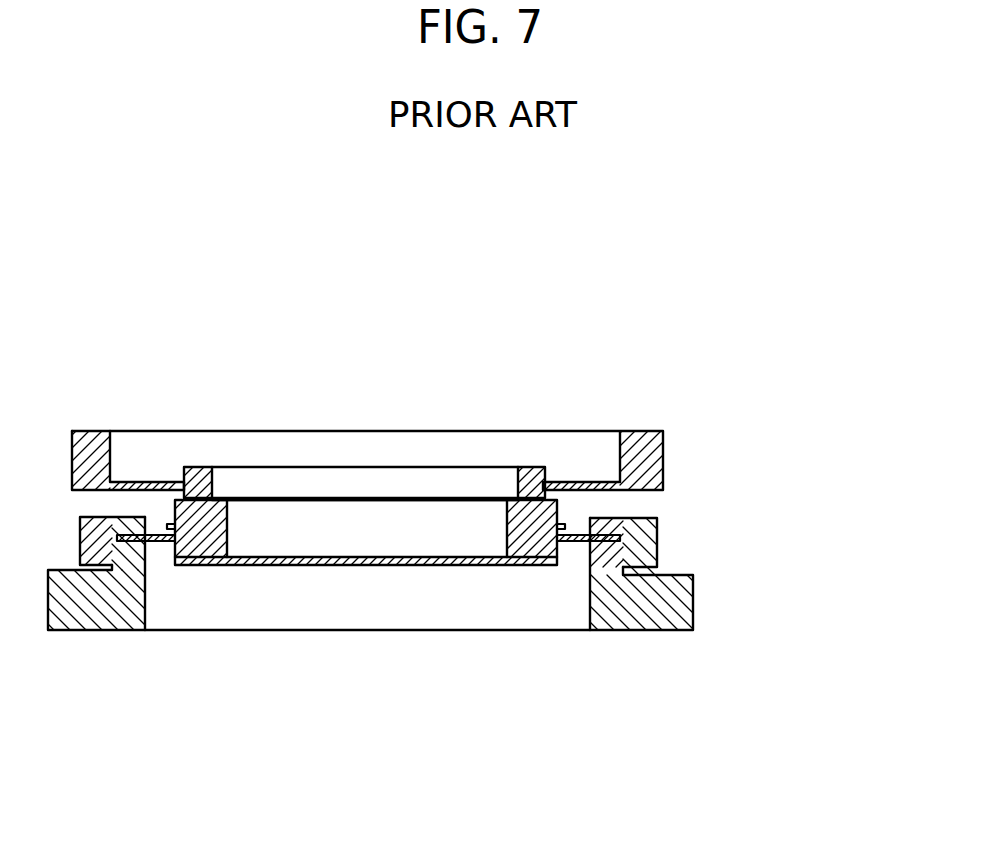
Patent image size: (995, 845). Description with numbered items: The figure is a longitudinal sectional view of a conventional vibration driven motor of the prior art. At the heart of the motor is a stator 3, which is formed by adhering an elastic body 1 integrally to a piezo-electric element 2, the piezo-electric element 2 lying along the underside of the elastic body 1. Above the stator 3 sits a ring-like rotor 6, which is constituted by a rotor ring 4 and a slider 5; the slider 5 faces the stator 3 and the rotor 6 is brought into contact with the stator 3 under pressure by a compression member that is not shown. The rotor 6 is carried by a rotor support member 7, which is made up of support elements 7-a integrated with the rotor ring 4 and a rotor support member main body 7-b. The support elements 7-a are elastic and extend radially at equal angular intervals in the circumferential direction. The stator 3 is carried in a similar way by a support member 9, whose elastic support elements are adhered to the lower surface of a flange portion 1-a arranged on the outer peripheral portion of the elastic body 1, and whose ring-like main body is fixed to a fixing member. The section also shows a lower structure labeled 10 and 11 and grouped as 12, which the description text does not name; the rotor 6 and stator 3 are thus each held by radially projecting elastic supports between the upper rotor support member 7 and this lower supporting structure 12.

The elastic body 1 is at (542, 543).
The flange portion 1-a is at (170, 521).
The piezo-electric element 2 is at (458, 568).
The stator 3 is at (602, 718).
The rotor ring 4 is at (270, 487).
The slider 5 is at (360, 497).
The rotor 6 is at (388, 333).
The rotor support member 7 is at (835, 333).
The support elements 7-a is at (585, 483).
The rotor support member main body 7-b is at (653, 453).
The support member 9 is at (155, 548).
The support block 10 is at (640, 545).
The base 11 is at (673, 612).
The base assembly 12 is at (797, 527).